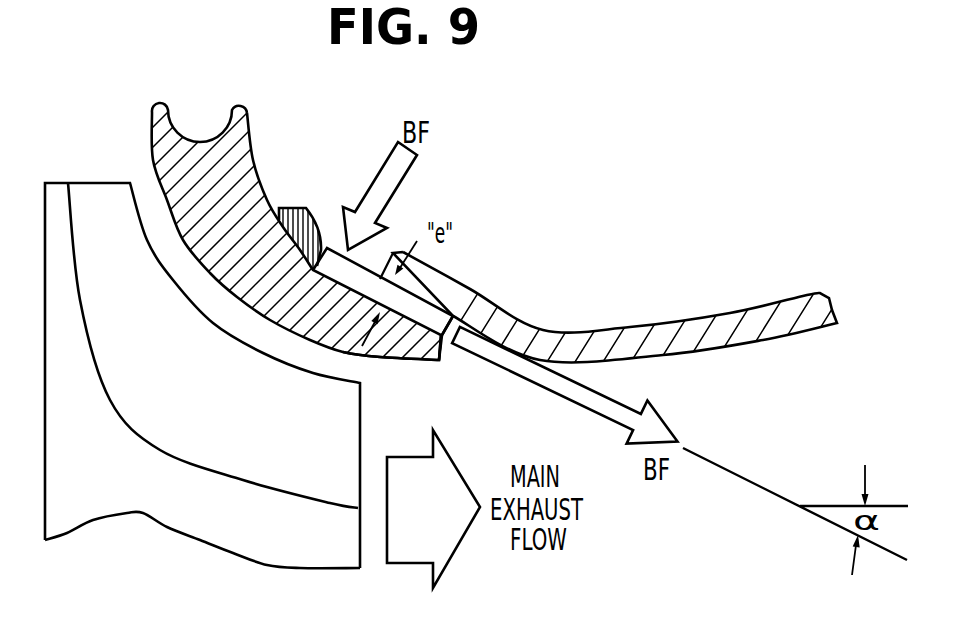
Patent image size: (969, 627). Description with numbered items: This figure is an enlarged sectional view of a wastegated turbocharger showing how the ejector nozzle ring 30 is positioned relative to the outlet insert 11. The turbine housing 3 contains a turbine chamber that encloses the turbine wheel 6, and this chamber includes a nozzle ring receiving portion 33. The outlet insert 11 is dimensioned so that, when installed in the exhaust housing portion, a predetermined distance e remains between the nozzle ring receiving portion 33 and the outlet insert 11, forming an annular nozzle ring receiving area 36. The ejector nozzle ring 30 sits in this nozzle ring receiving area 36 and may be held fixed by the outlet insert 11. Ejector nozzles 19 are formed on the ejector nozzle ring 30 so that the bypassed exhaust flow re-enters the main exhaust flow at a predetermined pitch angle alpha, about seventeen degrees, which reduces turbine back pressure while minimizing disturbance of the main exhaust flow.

The turbine housing 3 is at (190, 160).
The turbine wheel 6 is at (181, 478).
The outlet insert 11 is at (447, 298).
The ejector nozzles 19 is at (367, 268).
The ejector nozzle ring 30 is at (283, 207).
The nozzle ring receiving portion 33 is at (390, 345).
The nozzle ring receiving area 36 is at (448, 323).